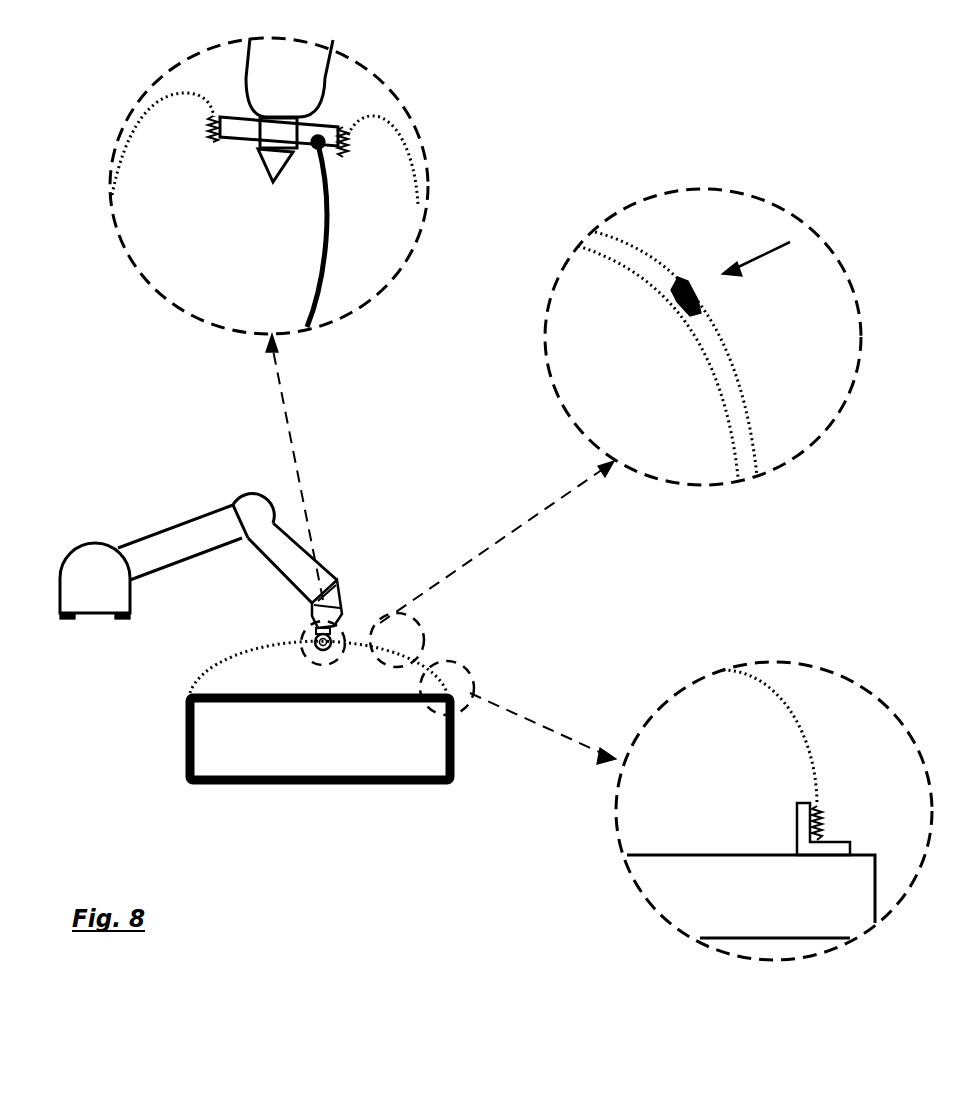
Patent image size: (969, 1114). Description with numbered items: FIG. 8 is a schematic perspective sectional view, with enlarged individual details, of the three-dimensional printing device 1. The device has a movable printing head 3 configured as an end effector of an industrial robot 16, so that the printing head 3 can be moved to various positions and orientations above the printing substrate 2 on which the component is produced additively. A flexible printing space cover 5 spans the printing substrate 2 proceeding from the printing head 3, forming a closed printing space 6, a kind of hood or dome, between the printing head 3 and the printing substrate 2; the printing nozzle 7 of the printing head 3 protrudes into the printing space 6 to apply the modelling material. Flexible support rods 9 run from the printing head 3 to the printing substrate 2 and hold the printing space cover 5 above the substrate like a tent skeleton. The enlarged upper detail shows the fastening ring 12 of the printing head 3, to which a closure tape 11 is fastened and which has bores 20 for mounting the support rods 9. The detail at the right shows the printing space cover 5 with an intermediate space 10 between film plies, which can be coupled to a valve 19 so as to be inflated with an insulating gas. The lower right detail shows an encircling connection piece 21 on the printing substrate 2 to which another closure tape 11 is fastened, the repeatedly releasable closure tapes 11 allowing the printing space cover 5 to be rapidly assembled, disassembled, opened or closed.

The 3D printing device 1 is at (393, 517).
The printing substrate 2 is at (238, 694).
The printing head 3 is at (310, 630).
The printing space cover 5 is at (426, 660).
The printing space 6 is at (196, 279).
The printing nozzle 7 is at (260, 162).
The support rod 9 is at (318, 227).
The intermediate space 10 is at (645, 267).
The closure tape 11 is at (216, 147).
The fastening ring 12 is at (240, 115).
The industrial robot 16 is at (80, 556).
The valve 19 is at (697, 292).
The bore 20 is at (324, 131).
The connection piece 21 is at (846, 846).